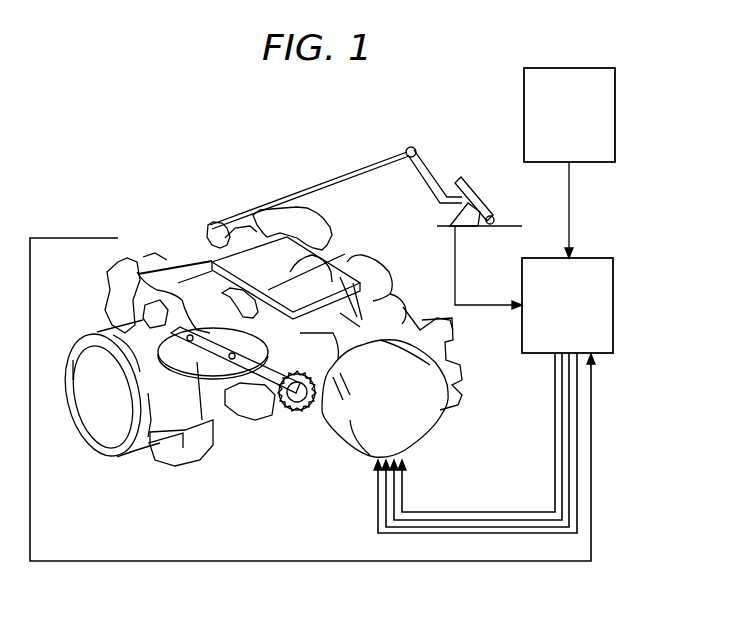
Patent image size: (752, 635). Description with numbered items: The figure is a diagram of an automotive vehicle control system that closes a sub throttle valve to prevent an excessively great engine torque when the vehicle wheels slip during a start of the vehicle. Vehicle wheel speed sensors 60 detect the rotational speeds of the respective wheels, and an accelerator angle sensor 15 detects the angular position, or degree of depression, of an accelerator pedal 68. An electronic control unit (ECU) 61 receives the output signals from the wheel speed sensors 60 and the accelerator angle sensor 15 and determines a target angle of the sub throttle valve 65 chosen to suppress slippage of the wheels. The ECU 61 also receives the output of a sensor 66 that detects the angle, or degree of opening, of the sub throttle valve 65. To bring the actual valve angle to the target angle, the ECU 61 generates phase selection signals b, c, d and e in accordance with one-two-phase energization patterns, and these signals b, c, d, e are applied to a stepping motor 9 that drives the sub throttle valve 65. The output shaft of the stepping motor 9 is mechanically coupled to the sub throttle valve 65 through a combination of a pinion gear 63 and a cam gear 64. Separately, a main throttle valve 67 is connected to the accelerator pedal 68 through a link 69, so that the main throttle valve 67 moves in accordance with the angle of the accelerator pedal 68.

The stepping motor 9 is at (410, 437).
The accelerator angle sensor 15 is at (457, 210).
The vehicle wheel speed sensors 60 is at (597, 66).
The electronic control unit (ECU) 61 is at (594, 257).
The pinion gear 63 is at (362, 440).
The cam gear 64 is at (287, 420).
The sub throttle valve 65 is at (192, 363).
The sensor 66 is at (107, 283).
The main throttle valve 67 is at (275, 258).
The accelerator pedal 68 is at (468, 181).
The link 69 is at (351, 172).
The phase selection signal b is at (505, 511).
The phase selection signal c is at (517, 519).
The phase selection signal d is at (536, 526).
The phase selection signal e is at (526, 534).